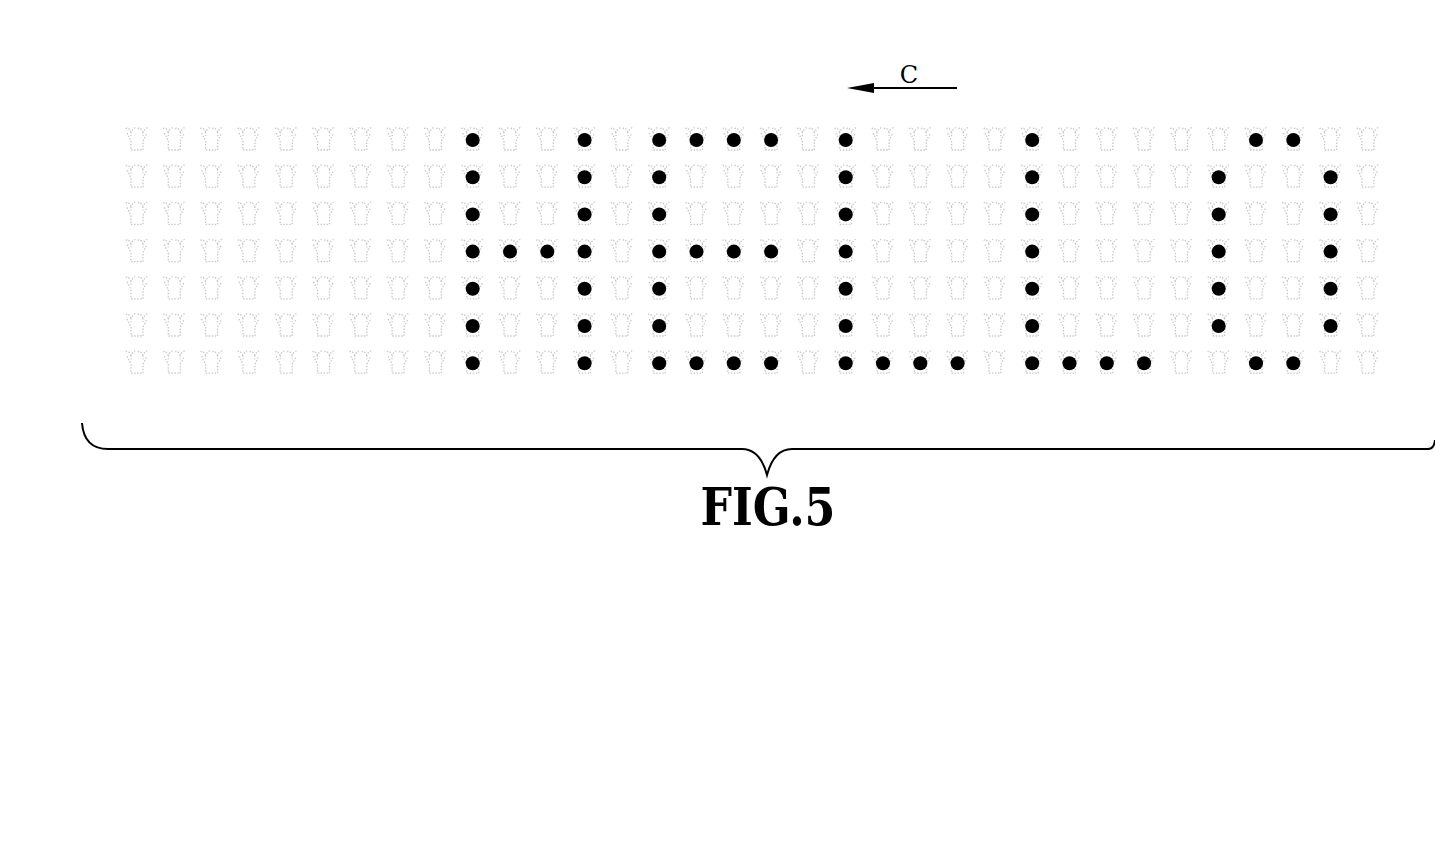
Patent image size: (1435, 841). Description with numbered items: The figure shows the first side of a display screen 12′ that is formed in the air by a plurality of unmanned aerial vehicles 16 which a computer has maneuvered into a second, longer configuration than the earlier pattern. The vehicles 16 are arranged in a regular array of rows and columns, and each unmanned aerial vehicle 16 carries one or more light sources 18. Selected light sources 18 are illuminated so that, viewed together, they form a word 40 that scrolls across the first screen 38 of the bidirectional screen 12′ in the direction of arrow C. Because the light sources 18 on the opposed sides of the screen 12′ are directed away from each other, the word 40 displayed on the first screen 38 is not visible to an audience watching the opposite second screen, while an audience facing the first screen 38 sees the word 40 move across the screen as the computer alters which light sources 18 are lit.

The display screen 12′ is at (756, 235).
The first screen 38 is at (756, 235).
The unmanned aerial vehicle 16 is at (250, 373).
The light source 18 is at (475, 373).
The word 40 is at (698, 128).